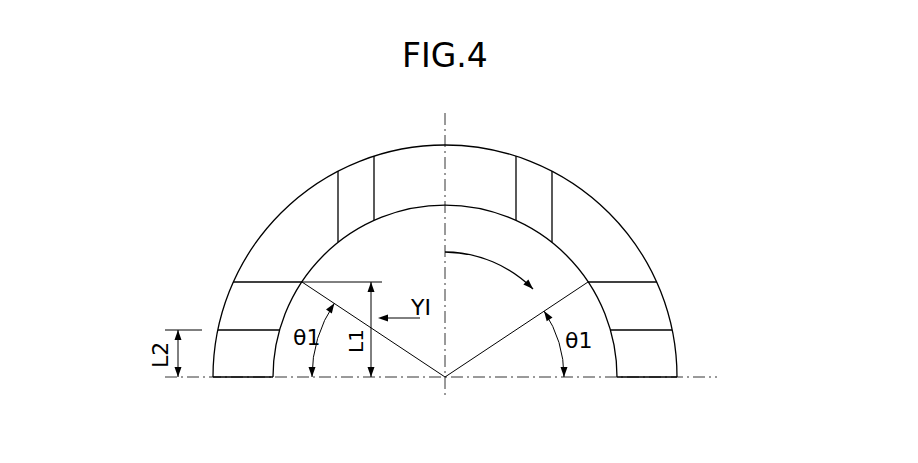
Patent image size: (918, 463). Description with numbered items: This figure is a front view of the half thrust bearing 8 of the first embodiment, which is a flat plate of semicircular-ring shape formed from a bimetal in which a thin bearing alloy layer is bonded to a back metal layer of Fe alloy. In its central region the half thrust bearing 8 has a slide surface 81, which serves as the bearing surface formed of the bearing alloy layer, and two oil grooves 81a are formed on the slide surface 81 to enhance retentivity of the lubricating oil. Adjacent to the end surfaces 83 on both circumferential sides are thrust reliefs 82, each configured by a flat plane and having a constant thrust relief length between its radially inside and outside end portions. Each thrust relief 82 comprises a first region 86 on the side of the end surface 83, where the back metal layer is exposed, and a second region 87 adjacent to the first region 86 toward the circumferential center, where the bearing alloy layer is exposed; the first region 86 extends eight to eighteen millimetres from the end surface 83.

The half thrust bearing 8 is at (616, 167).
The slide surface 81 is at (607, 223).
The oil groove 81a is at (358, 172).
The thrust relief 82 is at (160, 242).
The end surface 83 is at (230, 378).
The first region 86 is at (253, 343).
The second region 87 is at (262, 293).